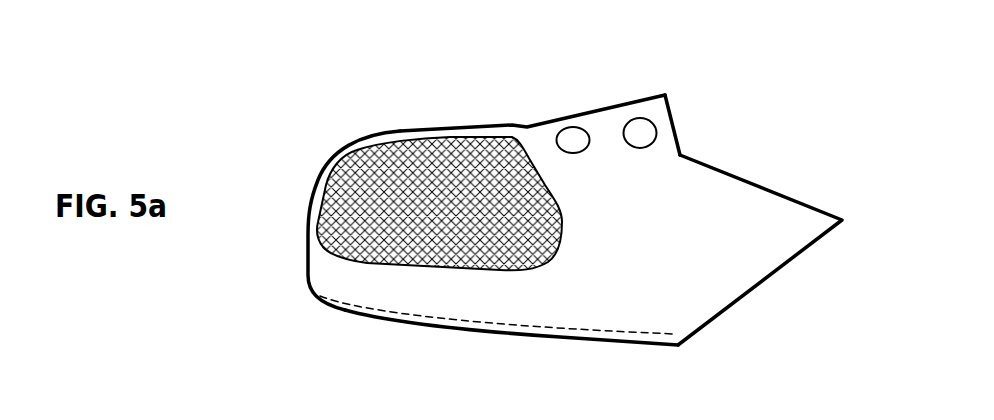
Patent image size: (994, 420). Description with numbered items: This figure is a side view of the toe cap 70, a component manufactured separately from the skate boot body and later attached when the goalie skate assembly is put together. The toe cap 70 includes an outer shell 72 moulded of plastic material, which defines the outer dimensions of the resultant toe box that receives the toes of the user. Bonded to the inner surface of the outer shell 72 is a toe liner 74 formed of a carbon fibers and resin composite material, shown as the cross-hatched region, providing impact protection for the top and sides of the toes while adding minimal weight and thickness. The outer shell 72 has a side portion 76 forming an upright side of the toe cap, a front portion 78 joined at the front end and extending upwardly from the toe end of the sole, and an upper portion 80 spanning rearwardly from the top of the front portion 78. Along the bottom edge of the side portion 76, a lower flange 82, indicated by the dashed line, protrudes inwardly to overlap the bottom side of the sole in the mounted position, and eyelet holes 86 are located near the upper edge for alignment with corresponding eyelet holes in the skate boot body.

The toe cap 70 is at (284, 123).
The outer shell 72 is at (532, 298).
The toe liner 74 is at (417, 232).
The side portion 76 is at (624, 262).
The front portion 78 is at (310, 222).
The upper portion 80 is at (482, 127).
The lower flange 82 is at (450, 317).
The eyelet hole 86 is at (574, 130).